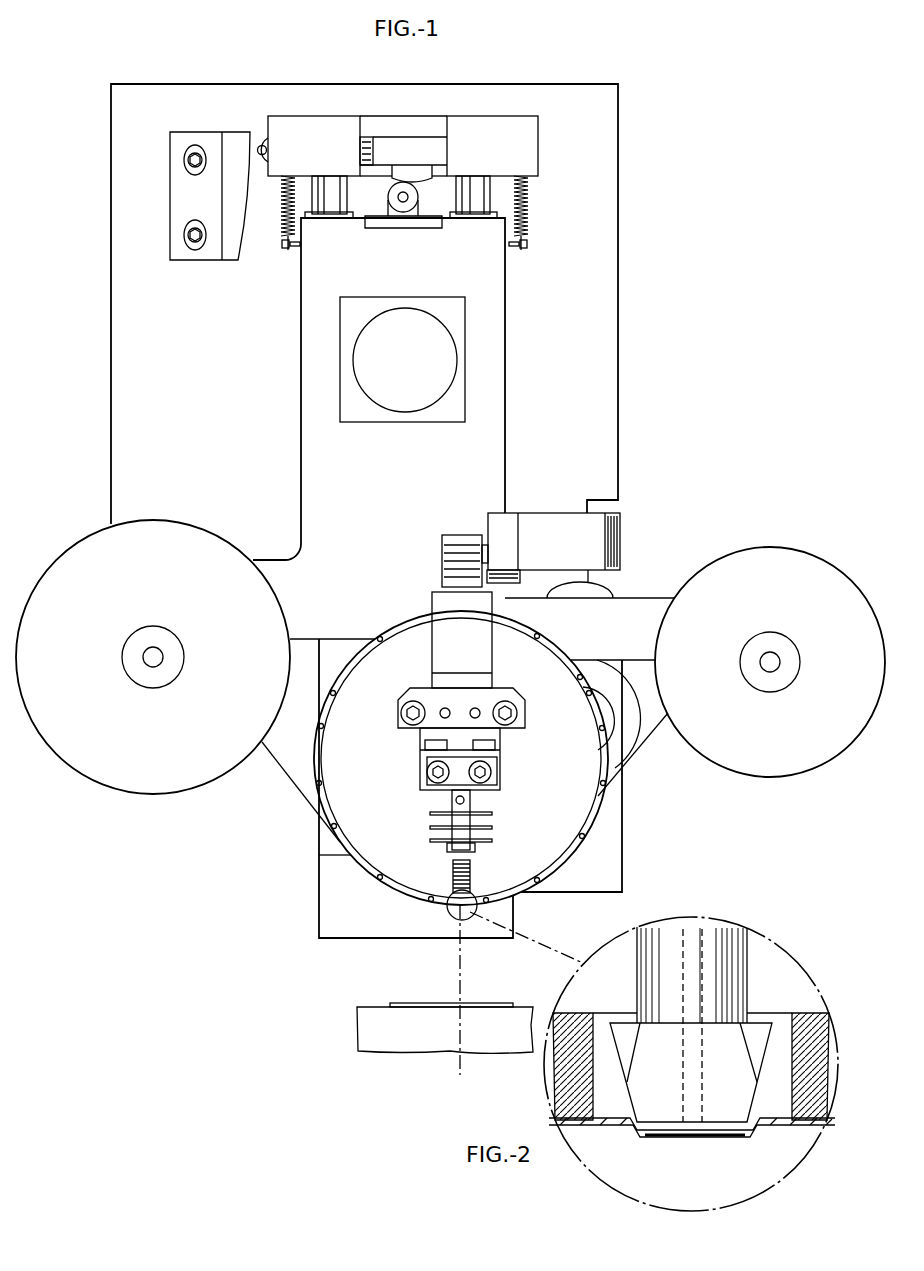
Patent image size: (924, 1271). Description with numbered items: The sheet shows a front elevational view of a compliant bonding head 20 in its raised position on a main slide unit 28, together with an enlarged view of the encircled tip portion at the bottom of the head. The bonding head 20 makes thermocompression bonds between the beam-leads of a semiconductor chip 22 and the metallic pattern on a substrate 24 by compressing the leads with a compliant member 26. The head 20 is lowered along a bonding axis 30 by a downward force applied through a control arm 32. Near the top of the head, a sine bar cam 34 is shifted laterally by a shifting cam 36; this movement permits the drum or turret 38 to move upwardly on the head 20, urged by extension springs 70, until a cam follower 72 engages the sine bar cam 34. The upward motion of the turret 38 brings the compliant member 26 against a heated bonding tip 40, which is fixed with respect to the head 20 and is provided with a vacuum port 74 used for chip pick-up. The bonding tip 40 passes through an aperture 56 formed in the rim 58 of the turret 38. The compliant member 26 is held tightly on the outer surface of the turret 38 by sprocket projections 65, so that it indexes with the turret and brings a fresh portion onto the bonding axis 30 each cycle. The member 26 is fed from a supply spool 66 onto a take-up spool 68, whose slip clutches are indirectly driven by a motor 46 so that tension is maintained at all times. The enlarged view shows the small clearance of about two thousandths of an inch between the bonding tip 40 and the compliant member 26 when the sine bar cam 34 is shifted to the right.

In FIG. 1, the bonding head 20 is at (648, 310).
In FIG. 2, the semiconductor chip 22 is at (700, 1134).
In FIG. 1, the substrate 24 is at (398, 1002).
In FIG. 1, the compliant member 26 is at (633, 765).
In FIG. 2, the compliant member 26 is at (617, 1131).
In FIG. 1, the main slide unit 28 is at (111, 265).
In FIG. 1, the bonding axis 30 is at (463, 987).
In FIG. 1, the control arm 32 is at (547, 513).
In FIG. 1, the sine bar cam 34 is at (428, 172).
In FIG. 1, the shifting cam 36 is at (242, 247).
In FIG. 1, the turret 38 is at (404, 627).
In FIG. 2, the heated bonding tip 40 is at (760, 1023).
In FIG. 1, the motor 46 is at (455, 338).
In FIG. 2, the aperture 56 is at (788, 1003).
In FIG. 1, the rim 58 is at (370, 873).
In FIG. 2, the rim 58 is at (586, 1013).
In FIG. 1, the sprocket projections 65 is at (543, 885).
In FIG. 1, the supply spool 66 is at (784, 548).
In FIG. 1, the take-up spool 68 is at (227, 540).
In FIG. 1, the extension springs 70 is at (281, 214).
In FIG. 1, the cam follower 72 is at (388, 197).
In FIG. 2, the vacuum port 74 is at (698, 1081).